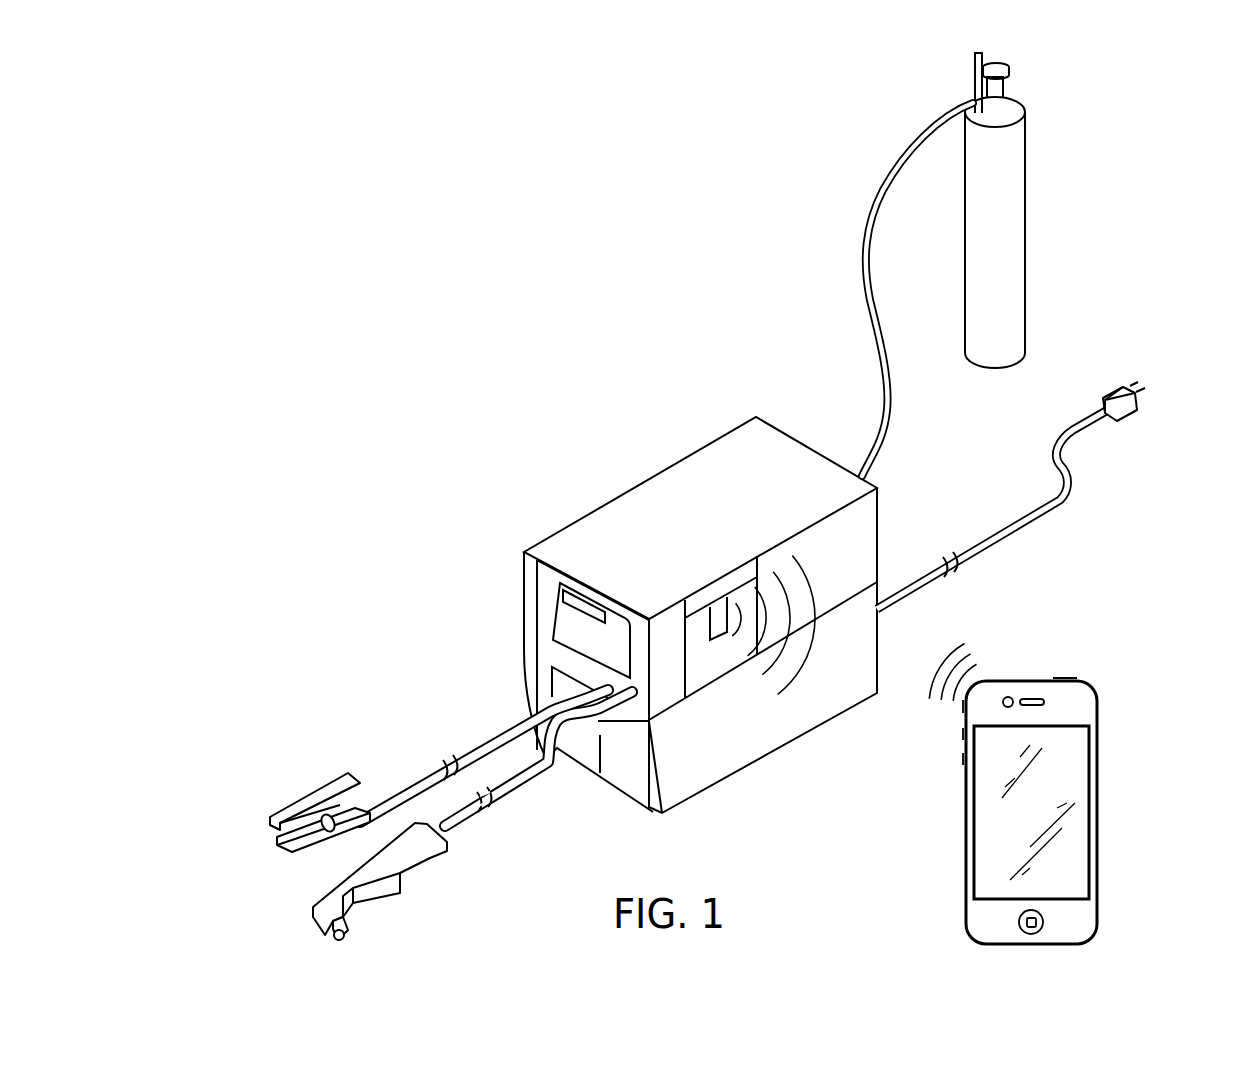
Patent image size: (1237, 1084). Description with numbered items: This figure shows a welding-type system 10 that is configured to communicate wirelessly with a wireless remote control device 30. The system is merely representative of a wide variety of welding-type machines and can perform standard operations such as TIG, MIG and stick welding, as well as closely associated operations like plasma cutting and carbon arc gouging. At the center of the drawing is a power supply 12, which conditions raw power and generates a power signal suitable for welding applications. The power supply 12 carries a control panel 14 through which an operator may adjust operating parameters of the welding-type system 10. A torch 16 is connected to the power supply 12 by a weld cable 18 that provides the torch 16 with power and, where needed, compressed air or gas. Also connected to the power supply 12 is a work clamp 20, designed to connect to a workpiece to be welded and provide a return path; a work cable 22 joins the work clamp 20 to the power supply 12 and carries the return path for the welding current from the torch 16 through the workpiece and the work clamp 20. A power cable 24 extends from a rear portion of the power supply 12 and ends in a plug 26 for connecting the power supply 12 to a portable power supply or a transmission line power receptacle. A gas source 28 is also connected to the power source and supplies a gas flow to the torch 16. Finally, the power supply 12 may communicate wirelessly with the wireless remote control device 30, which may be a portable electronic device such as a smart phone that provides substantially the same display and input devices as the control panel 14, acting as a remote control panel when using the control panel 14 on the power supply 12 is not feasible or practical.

The welding-type system 10 is at (520, 484).
The power supply 12 is at (736, 438).
The control panel 14 is at (553, 604).
The torch 16 is at (272, 905).
The weld cable 18 is at (553, 770).
The work clamp 20 is at (310, 797).
The work cable 22 is at (409, 789).
The power cable 24 is at (1010, 545).
The plug 26 is at (1127, 421).
The gas source 28 is at (1027, 226).
The wireless remote control device 30 is at (1093, 683).